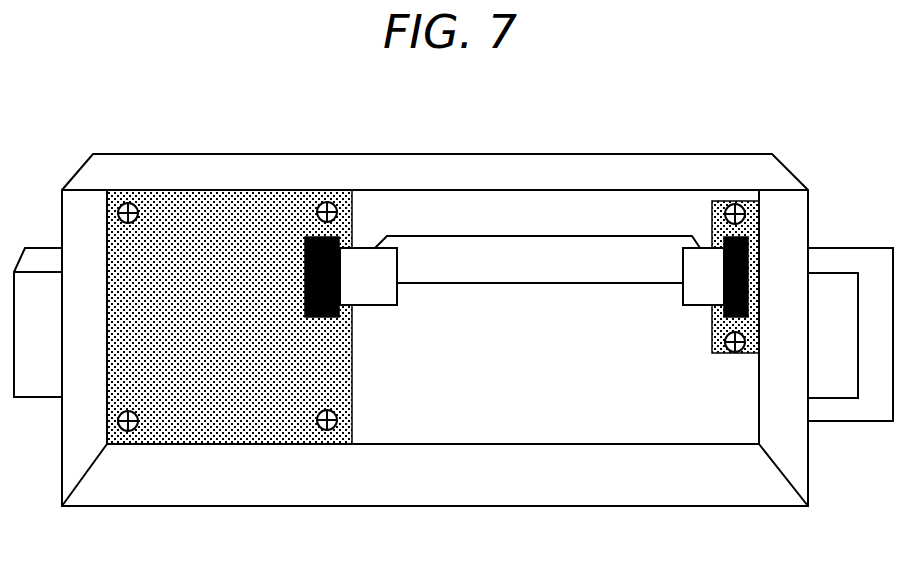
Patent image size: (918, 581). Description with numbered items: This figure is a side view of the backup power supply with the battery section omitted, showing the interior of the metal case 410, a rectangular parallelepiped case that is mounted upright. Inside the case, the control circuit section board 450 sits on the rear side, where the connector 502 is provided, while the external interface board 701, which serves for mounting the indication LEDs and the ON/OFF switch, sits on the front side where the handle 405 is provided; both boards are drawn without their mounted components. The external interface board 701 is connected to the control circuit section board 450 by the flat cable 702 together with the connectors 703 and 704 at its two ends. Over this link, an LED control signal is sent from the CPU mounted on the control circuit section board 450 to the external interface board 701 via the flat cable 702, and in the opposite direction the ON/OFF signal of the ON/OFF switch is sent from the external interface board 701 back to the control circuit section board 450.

The metal case 410 is at (286, 499).
The control circuit section board 450 is at (239, 200).
The connector 502 is at (32, 257).
The handle 405 is at (850, 248).
The external interface board 701 is at (716, 355).
The flat cable 702 is at (520, 283).
The connector 703 is at (320, 318).
The connector 704 is at (722, 285).